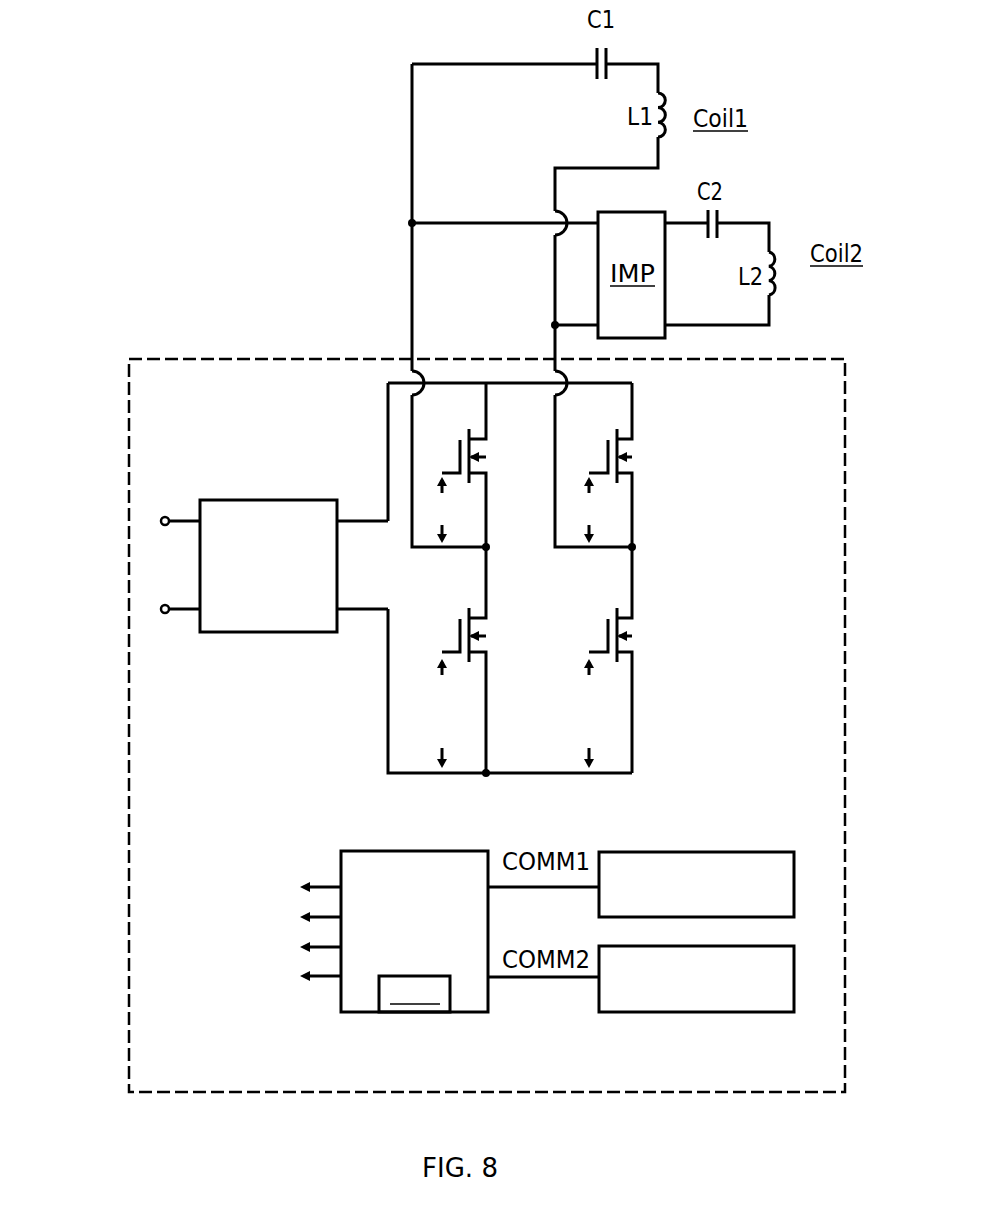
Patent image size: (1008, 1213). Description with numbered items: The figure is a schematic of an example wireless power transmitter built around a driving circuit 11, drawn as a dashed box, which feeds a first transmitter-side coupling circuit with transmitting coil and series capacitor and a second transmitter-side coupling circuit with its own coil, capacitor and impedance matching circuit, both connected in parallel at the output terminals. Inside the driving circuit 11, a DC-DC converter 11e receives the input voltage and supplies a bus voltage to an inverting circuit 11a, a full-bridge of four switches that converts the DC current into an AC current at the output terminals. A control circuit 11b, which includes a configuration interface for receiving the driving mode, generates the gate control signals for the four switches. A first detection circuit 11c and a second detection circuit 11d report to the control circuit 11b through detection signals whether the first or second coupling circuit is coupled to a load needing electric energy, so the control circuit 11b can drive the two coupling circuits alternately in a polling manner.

The driving circuit 11 is at (129, 410).
The inverting circuit 11a is at (632, 733).
The control circuit 11b is at (387, 1012).
The first detection circuit 11c is at (670, 852).
The second detection circuit 11d is at (643, 1012).
The DC-DC converter 11e is at (263, 632).